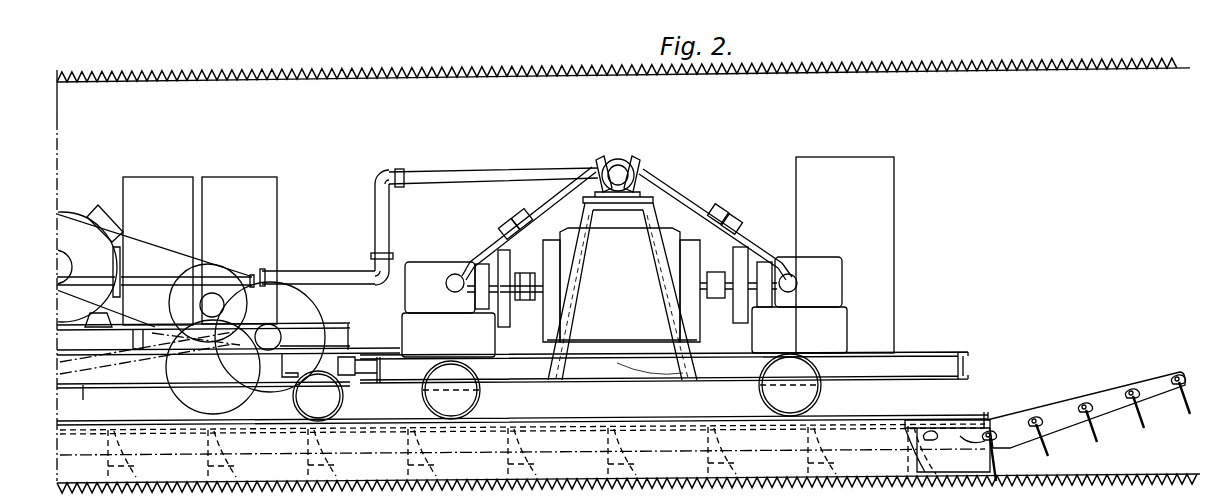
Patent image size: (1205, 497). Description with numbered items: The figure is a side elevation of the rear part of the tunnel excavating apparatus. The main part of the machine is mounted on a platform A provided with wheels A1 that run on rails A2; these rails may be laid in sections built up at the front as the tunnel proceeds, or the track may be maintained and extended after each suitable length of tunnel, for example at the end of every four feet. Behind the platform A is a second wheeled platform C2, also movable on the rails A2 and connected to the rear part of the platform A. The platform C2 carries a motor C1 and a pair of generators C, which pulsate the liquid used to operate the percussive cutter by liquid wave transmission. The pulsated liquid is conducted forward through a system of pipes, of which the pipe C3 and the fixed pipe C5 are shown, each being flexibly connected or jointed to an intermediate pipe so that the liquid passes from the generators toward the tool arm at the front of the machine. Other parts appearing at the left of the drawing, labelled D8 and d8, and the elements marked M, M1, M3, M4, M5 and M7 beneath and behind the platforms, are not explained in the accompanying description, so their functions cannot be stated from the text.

The platform A is at (144, 372).
The wheels A1 is at (325, 396).
The rails A2 is at (545, 405).
The generators C is at (420, 285).
The motor C1 is at (672, 235).
The wheeled platform C2 is at (733, 360).
The pipe C3 is at (482, 182).
The fixed pipe C5 is at (322, 282).
The pulley D8 is at (66, 218).
The shaft d8 is at (71, 267).
The tool frame M is at (1047, 455).
The tine M1 is at (966, 446).
The drum M3 is at (245, 348).
The frame bar M4 is at (94, 400).
The housing M5 is at (156, 242).
The gear M7 is at (212, 268).